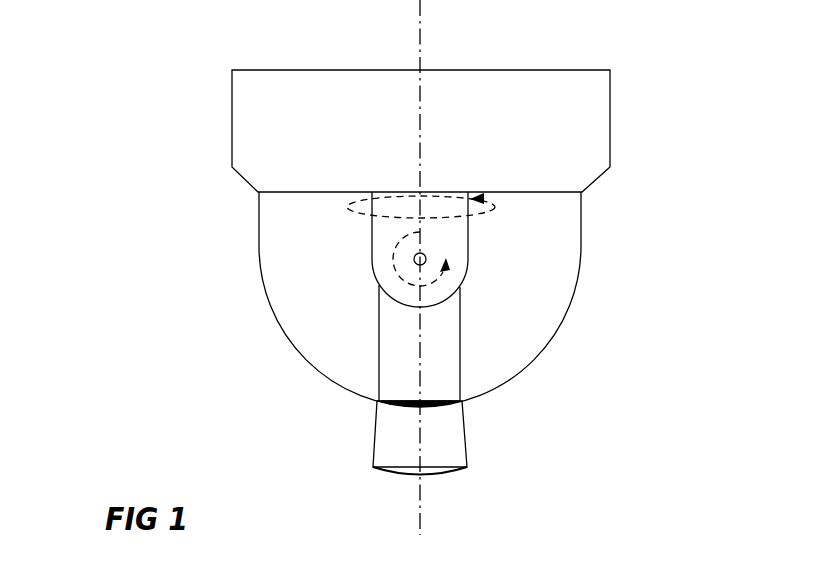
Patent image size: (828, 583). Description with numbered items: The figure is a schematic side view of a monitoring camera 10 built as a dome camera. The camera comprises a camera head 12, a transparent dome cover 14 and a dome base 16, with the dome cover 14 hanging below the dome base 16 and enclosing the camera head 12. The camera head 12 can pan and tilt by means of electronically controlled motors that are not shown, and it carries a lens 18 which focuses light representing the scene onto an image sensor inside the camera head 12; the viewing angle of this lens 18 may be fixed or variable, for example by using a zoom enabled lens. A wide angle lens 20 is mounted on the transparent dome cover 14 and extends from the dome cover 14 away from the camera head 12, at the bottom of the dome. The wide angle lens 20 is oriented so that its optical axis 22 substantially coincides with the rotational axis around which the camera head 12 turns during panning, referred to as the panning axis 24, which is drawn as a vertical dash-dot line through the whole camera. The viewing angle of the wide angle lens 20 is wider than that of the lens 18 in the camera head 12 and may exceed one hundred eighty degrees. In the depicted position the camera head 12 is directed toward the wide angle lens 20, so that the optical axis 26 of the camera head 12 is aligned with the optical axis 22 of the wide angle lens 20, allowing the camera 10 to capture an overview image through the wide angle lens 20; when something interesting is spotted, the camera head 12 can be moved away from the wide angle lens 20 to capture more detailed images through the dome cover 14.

The monitoring camera 10 is at (140, 60).
The camera head 12 is at (447, 322).
The transparent dome cover 14 is at (578, 268).
The dome base 16 is at (304, 80).
The lens 18 is at (427, 402).
The wide angle lens 20 is at (462, 435).
The optical axis of the wide angle lens 22 is at (422, 493).
The panning axis 24 is at (420, 40).
The optical axis of the camera head 26 is at (420, 322).